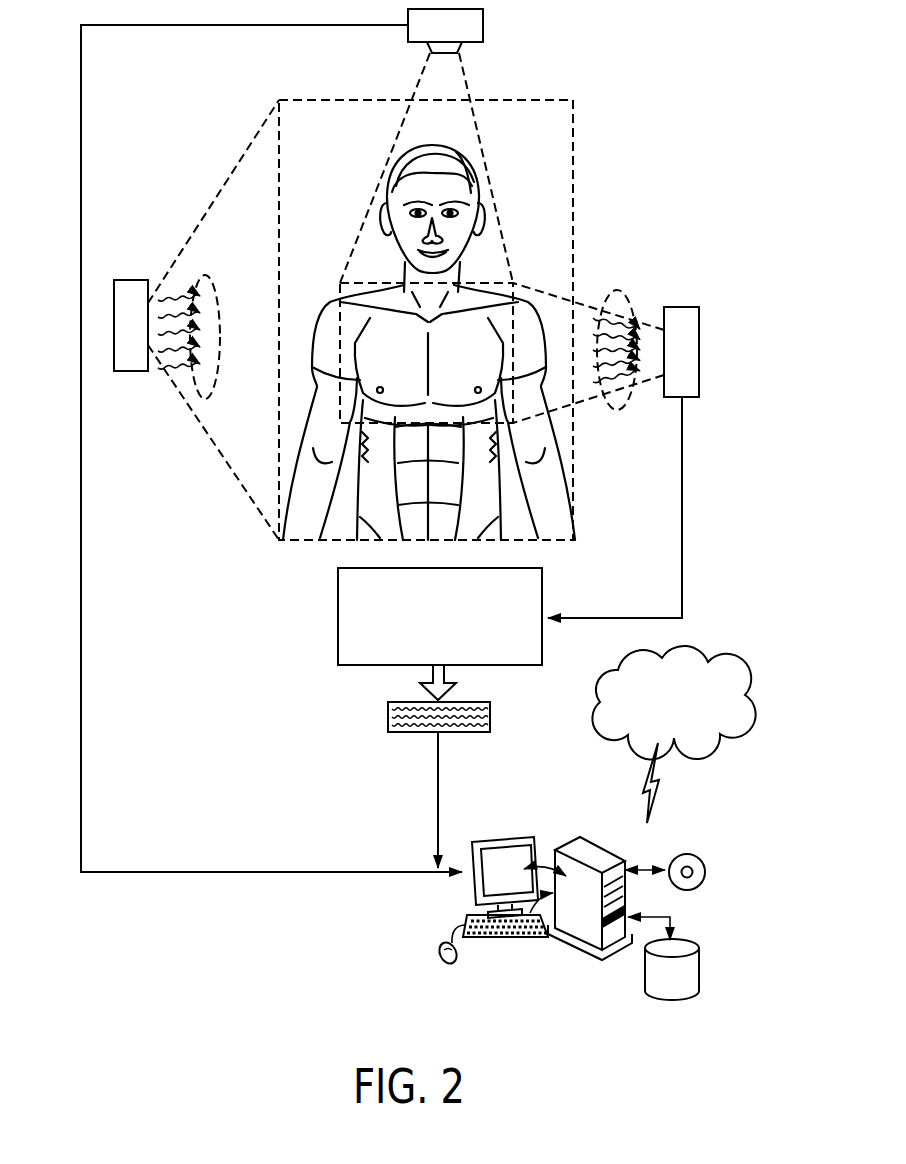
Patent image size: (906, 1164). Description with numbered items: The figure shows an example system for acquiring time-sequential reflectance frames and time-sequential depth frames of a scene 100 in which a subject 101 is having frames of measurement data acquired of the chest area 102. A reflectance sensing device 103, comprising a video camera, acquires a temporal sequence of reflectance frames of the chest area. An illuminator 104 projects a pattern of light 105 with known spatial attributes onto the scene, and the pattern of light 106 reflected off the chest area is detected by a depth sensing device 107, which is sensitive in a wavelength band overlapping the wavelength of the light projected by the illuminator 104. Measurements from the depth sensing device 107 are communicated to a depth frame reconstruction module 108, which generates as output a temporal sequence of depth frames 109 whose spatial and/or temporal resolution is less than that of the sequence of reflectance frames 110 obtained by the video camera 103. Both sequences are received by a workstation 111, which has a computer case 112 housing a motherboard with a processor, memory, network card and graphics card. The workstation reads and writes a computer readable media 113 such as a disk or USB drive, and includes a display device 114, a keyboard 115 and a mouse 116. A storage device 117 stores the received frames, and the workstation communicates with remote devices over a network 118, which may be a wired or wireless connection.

The scene 100 is at (573, 142).
The subject 101 is at (406, 156).
The chest area 102 is at (348, 283).
The reflectance sensing device 103 is at (483, 27).
The illuminator 104 is at (131, 280).
The pattern of light 105 is at (212, 392).
The reflected pattern of light 106 is at (620, 408).
The depth sensing device 107 is at (678, 307).
The depth frame reconstruction module 108 is at (542, 581).
The depth frames 109 is at (490, 712).
The reflectance frames 110 is at (348, 870).
The workstation 111 is at (684, 806).
The computer case 112 is at (600, 843).
The computer readable media 113 is at (700, 856).
The display device 114 is at (520, 840).
The keyboard 115 is at (492, 938).
The mouse 116 is at (451, 964).
The storage device 117 is at (645, 962).
The network 118 is at (731, 664).